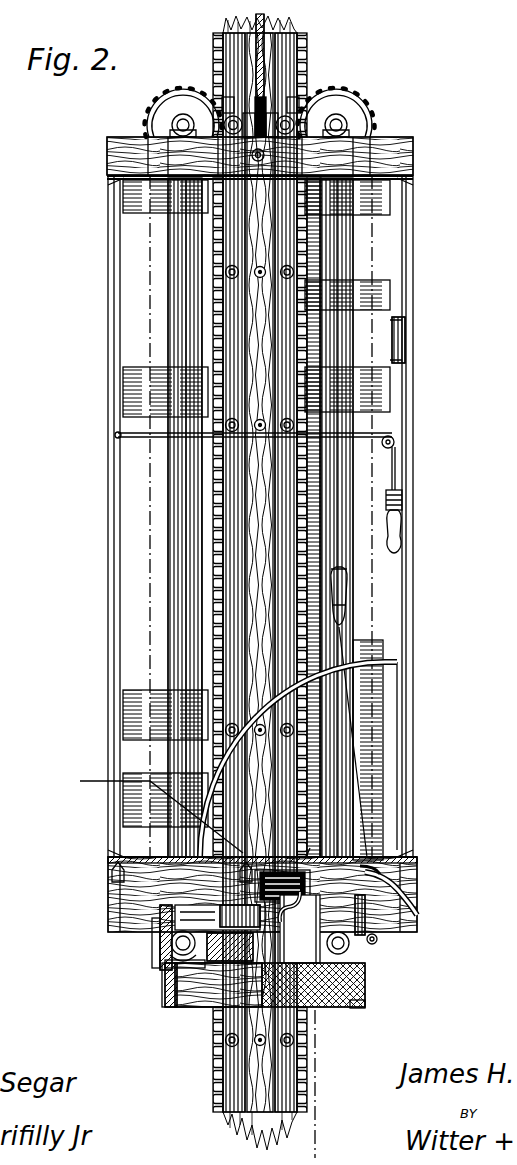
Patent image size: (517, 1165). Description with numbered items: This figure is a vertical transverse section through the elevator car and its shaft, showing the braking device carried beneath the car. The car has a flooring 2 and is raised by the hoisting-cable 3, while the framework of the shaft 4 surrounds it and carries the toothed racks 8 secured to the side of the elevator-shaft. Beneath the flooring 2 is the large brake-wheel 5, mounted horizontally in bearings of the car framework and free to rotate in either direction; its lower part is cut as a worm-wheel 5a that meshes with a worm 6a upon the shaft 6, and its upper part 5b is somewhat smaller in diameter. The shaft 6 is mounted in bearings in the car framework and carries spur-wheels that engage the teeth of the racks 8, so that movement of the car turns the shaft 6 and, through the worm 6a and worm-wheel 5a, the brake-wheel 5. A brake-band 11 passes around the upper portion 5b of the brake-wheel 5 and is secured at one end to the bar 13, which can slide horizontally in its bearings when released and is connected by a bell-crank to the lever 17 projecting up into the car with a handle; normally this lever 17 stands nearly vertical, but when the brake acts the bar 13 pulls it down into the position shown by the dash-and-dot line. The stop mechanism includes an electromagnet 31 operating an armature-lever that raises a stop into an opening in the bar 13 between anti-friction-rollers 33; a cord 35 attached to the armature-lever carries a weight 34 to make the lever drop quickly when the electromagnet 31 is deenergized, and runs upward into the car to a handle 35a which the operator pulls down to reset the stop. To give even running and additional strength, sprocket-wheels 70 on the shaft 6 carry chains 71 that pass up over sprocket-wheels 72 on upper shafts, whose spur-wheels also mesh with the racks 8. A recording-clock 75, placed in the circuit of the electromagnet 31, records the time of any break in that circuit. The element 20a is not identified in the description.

The flooring 2 is at (160, 857).
The hoisting-cable 3 is at (262, 28).
The framework of the shaft 4 is at (292, 28).
The brake-wheel 5 is at (355, 970).
The worm-wheel 5a is at (232, 960).
The upper part of brake-wheel 5b is at (395, 872).
The shaft 6 is at (171, 946).
The worm 6a is at (185, 965).
The rack 8 is at (215, 565).
The brake-band 11 is at (410, 905).
The bar 13 is at (180, 913).
The lever 17 is at (345, 605).
The cylinder block 20a is at (300, 929).
The electromagnet 31 is at (402, 500).
The anti-friction-rollers 33 is at (240, 916).
The weight 34 is at (218, 985).
The cord 35 is at (395, 470).
The handle 35a is at (408, 540).
The sprocket-wheel 70 is at (160, 945).
The chain 71 is at (373, 262).
The sprocket-wheel 72 is at (181, 88).
The recording-clock 75 is at (405, 333).